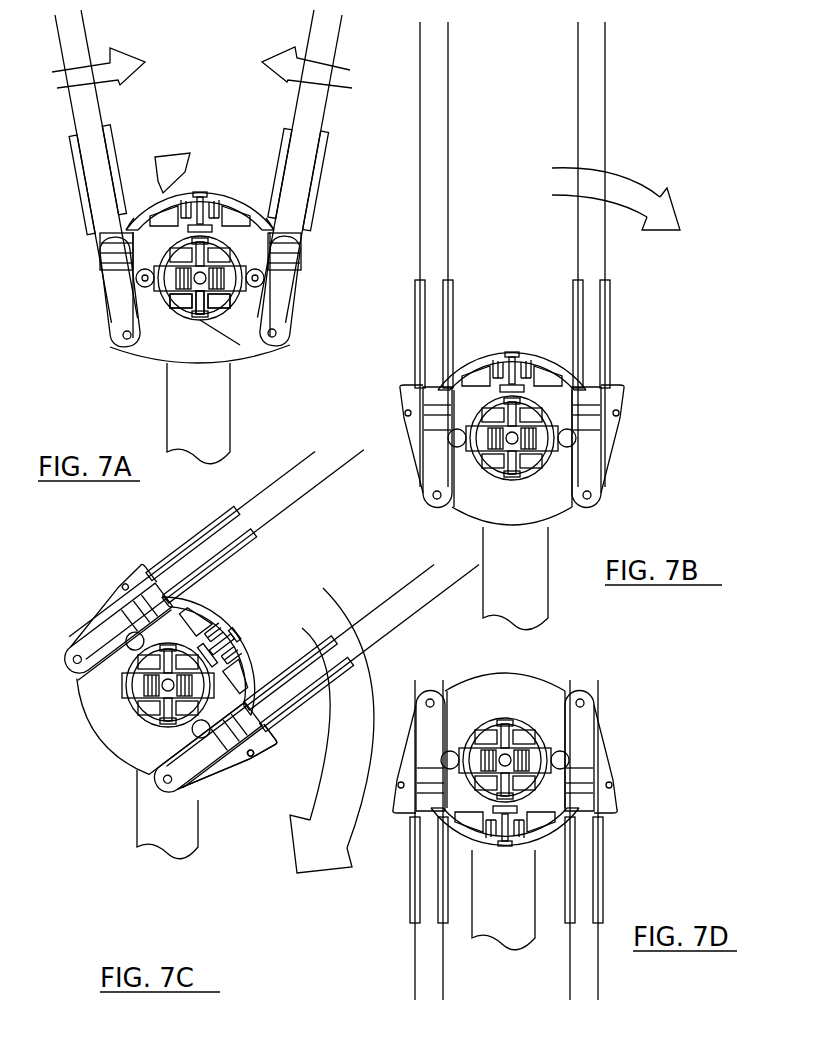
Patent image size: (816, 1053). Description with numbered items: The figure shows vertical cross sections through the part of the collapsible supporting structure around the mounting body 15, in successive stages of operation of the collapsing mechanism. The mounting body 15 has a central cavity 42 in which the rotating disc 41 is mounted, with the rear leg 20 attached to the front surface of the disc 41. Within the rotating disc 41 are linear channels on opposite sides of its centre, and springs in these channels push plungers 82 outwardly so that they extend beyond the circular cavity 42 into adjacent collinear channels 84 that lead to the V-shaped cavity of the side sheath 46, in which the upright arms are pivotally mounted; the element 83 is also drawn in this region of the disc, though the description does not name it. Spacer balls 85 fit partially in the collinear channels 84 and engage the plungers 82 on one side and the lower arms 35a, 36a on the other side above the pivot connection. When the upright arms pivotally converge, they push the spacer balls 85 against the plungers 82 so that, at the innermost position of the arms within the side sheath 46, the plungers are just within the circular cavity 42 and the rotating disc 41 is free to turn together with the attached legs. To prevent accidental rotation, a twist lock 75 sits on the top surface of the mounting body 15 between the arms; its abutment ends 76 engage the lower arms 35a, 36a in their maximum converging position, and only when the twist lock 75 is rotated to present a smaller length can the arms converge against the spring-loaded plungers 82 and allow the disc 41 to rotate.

In FIG. 7A, the mounting body 15 is at (193, 357).
In FIG. 7A, the rear leg 20 is at (222, 433).
In FIG. 7A, the lower arm 35a is at (110, 144).
In FIG. 7A, the lower arm 36a is at (303, 163).
In FIG. 7C, the lower arm 36a is at (282, 706).
In FIG. 7A, the rotating disc 41 is at (230, 310).
In FIG. 7A, the central cavity 42 is at (215, 327).
In FIG. 7A, the side sheath 46 is at (308, 237).
In FIG. 7C, the side sheath 46 is at (237, 775).
In FIG. 7A, the twist lock 75 is at (178, 203).
In FIG. 7A, the abutment ends 76 is at (130, 218).
In FIG. 7A, the plunger 82 is at (153, 310).
In FIG. 7A, the spring guide 83 is at (177, 307).
In FIG. 7A, the collinear channels 84 is at (138, 273).
In FIG. 7A, the spacer balls 85 is at (293, 298).